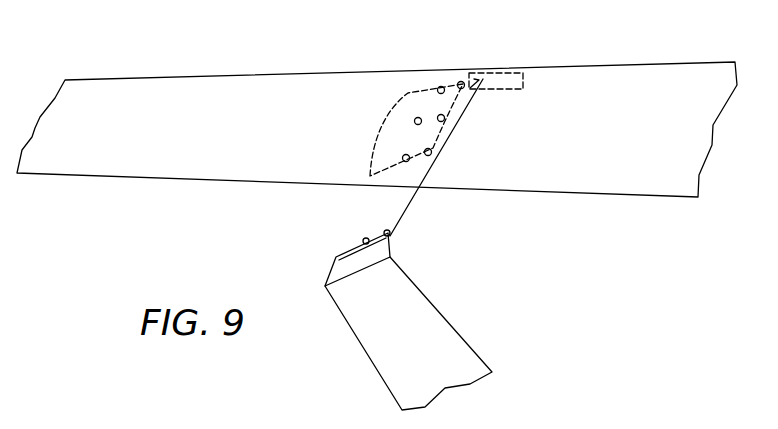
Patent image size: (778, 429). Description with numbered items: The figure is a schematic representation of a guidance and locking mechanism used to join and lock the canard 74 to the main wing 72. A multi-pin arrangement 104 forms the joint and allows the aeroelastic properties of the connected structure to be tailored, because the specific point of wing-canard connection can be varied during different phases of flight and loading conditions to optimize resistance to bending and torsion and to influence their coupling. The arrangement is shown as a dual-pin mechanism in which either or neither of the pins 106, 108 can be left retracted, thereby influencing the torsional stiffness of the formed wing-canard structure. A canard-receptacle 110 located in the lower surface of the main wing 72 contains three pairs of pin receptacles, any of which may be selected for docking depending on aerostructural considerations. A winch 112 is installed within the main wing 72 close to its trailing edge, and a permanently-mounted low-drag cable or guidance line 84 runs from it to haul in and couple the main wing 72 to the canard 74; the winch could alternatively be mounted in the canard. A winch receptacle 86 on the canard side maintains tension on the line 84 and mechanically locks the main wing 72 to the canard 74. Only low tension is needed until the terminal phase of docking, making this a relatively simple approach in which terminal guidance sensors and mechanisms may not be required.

The main wing 72 is at (171, 100).
The canard 74 is at (375, 340).
The guidance line 84 is at (418, 204).
The winch receptacle 86 is at (333, 273).
The multi-pin arrangement 104 is at (540, 55).
The pin 106 is at (363, 240).
The pin 108 is at (384, 230).
The canard-receptacle 110 is at (400, 135).
The winch 112 is at (510, 88).